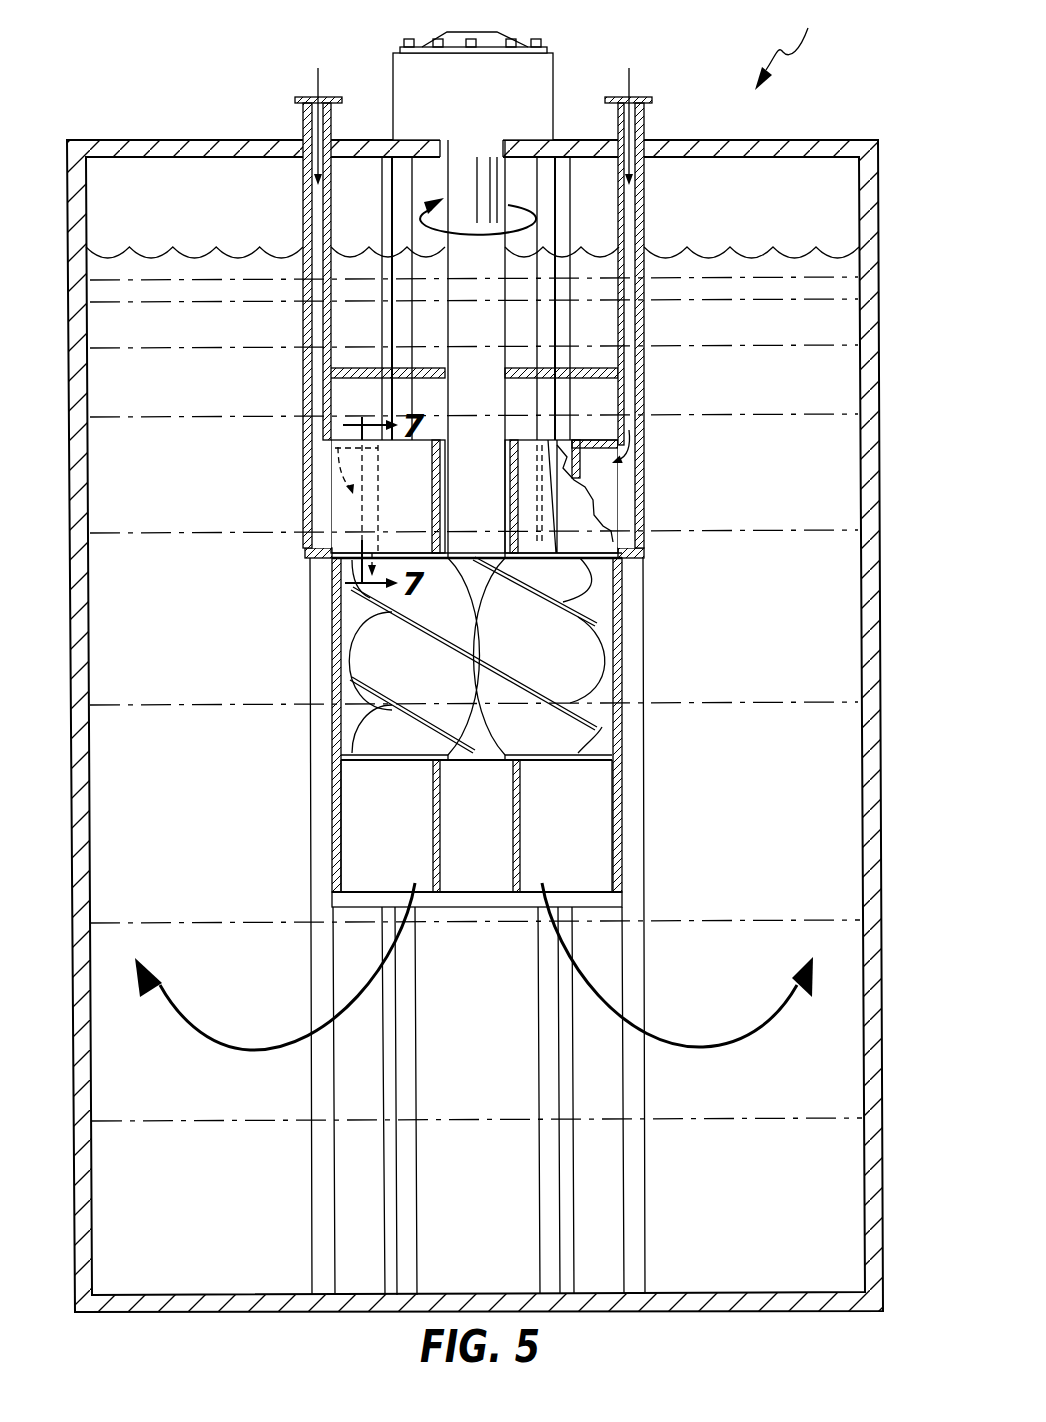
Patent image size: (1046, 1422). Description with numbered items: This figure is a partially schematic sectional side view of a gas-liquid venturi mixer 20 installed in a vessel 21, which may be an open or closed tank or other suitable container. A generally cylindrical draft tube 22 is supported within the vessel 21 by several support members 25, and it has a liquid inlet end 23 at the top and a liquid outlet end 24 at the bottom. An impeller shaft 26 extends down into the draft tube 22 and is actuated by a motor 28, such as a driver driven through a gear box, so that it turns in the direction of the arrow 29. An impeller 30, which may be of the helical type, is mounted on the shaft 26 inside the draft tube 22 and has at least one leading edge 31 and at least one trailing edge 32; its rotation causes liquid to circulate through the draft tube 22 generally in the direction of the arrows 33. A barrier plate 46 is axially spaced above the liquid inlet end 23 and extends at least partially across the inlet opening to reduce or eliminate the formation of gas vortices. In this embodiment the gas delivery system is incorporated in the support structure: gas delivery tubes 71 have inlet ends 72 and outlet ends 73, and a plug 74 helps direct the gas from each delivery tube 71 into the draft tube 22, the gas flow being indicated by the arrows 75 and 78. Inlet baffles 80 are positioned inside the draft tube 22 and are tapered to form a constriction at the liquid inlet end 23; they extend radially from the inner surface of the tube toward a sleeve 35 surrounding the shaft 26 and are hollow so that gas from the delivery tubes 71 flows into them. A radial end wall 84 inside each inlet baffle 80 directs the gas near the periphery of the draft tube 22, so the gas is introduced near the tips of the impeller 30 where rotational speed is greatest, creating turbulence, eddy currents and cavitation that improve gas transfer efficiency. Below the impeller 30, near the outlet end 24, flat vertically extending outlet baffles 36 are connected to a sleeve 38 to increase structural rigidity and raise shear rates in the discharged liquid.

The venturi mixer 20 is at (790, 45).
The vessel 21 is at (880, 358).
The draft tube 22 is at (622, 630).
The liquid inlet end 23 is at (622, 572).
The liquid outlet end 24 is at (622, 897).
The support members 25 is at (618, 1098).
The impeller shaft 26 is at (457, 322).
The motor 28 is at (550, 72).
The arrow indicating direction of rotation 29 is at (414, 230).
The impeller 30 is at (585, 664).
The leading edge 31 is at (612, 598).
The trailing edge 32 is at (582, 728).
The arrows indicating liquid circulation 33 is at (703, 1050).
The sleeve 35 is at (517, 513).
The outlet baffles 36 is at (600, 818).
The sleeve 38 is at (520, 792).
The barrier plate 46 is at (591, 368).
The gas delivery tubes 71 is at (633, 212).
The inlet end 72 is at (645, 100).
The outlet end 73 is at (633, 462).
The plug 74 is at (318, 546).
The arrow indicating gas flow 75 is at (631, 90).
The arrow indicating gas flow 78 is at (605, 485).
The inlet baffles 80 is at (422, 493).
The radial end wall 84 is at (582, 467).